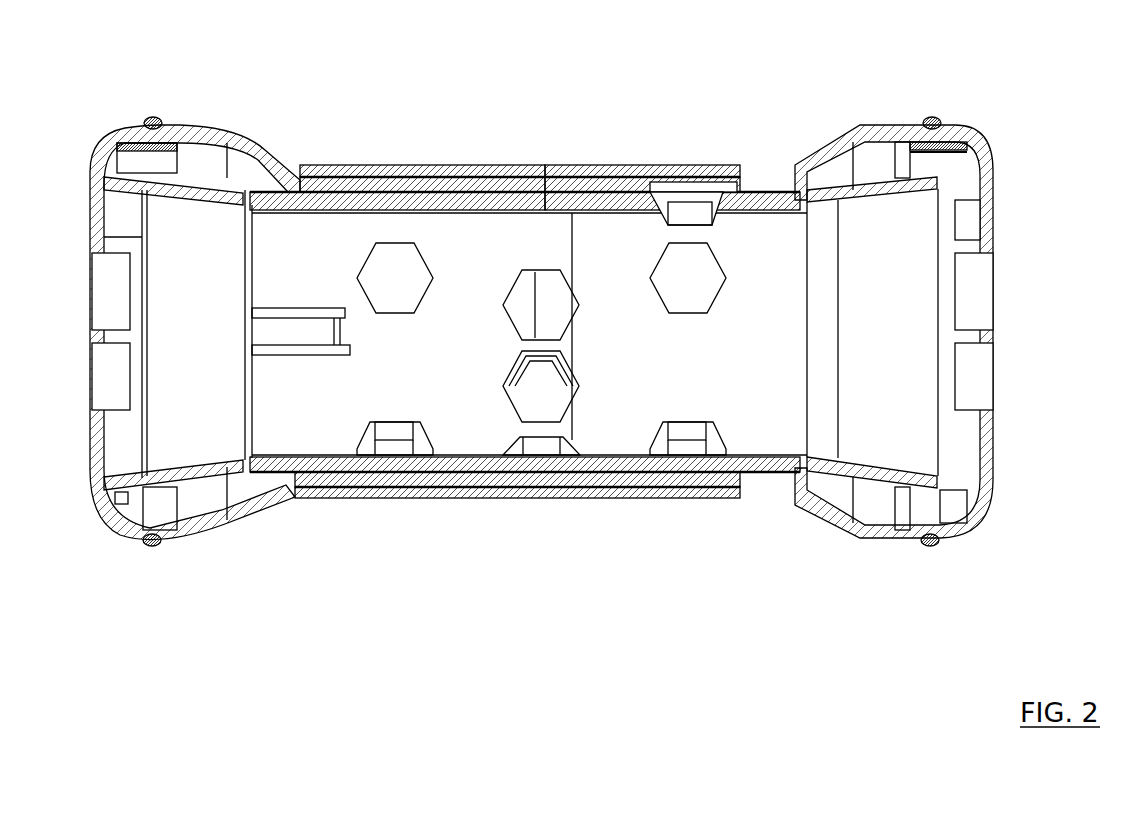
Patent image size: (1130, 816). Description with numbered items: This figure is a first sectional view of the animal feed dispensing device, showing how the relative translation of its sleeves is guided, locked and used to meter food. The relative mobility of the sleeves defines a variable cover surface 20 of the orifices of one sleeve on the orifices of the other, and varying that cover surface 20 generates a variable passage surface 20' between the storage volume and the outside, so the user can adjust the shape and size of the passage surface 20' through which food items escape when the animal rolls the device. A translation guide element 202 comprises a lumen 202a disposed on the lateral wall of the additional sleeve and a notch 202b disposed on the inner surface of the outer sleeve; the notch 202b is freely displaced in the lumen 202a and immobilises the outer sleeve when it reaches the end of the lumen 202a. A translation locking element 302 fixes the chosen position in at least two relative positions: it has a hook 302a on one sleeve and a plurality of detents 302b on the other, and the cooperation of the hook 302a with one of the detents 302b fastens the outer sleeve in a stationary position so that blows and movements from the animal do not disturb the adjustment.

The translation locking element 302 is at (435, 50).
The hook 302a is at (296, 172).
The plurality of detents 302b is at (340, 186).
The translation guide element 202 is at (800, 50).
The lumen 202a is at (678, 172).
The notch 202b is at (728, 172).
The cover surface 20 is at (524, 274).
The passage surface 20' is at (546, 265).